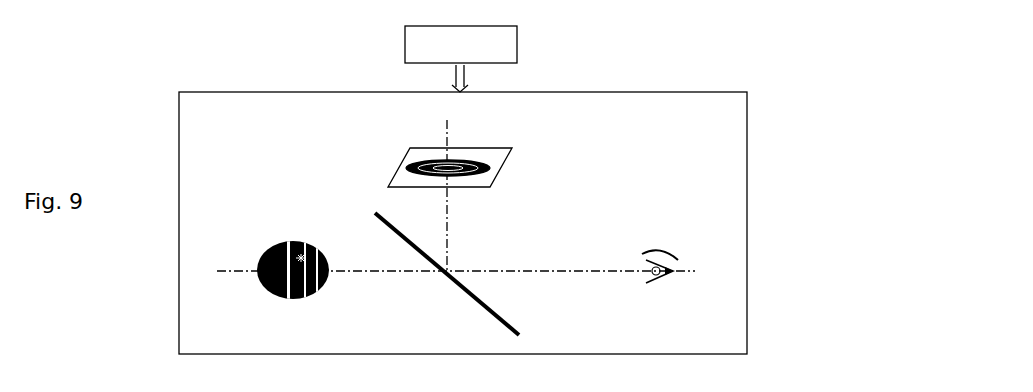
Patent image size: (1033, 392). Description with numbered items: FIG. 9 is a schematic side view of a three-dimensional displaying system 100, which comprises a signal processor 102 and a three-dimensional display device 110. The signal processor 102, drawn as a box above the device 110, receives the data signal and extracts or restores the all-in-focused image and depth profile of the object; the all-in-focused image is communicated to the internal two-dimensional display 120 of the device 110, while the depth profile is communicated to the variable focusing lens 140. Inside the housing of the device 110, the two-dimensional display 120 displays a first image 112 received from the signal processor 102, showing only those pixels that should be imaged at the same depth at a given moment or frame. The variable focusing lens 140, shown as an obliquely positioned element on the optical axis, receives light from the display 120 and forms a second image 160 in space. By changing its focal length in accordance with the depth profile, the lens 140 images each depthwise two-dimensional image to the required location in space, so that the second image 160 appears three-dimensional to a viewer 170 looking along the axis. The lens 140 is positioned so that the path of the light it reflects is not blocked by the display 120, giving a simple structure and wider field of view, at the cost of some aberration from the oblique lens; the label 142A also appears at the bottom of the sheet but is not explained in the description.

The displaying system 100 is at (176, 321).
The signal processor 102 is at (523, 52).
The three-dimensional display device 110 is at (560, 183).
The first image 112 is at (430, 162).
The two-dimensional display 120 is at (498, 143).
The variable focusing lens 140 is at (508, 322).
The second image 160 is at (255, 247).
The viewer 170 is at (685, 250).
The beam splitter surface 142A is at (350, 389).